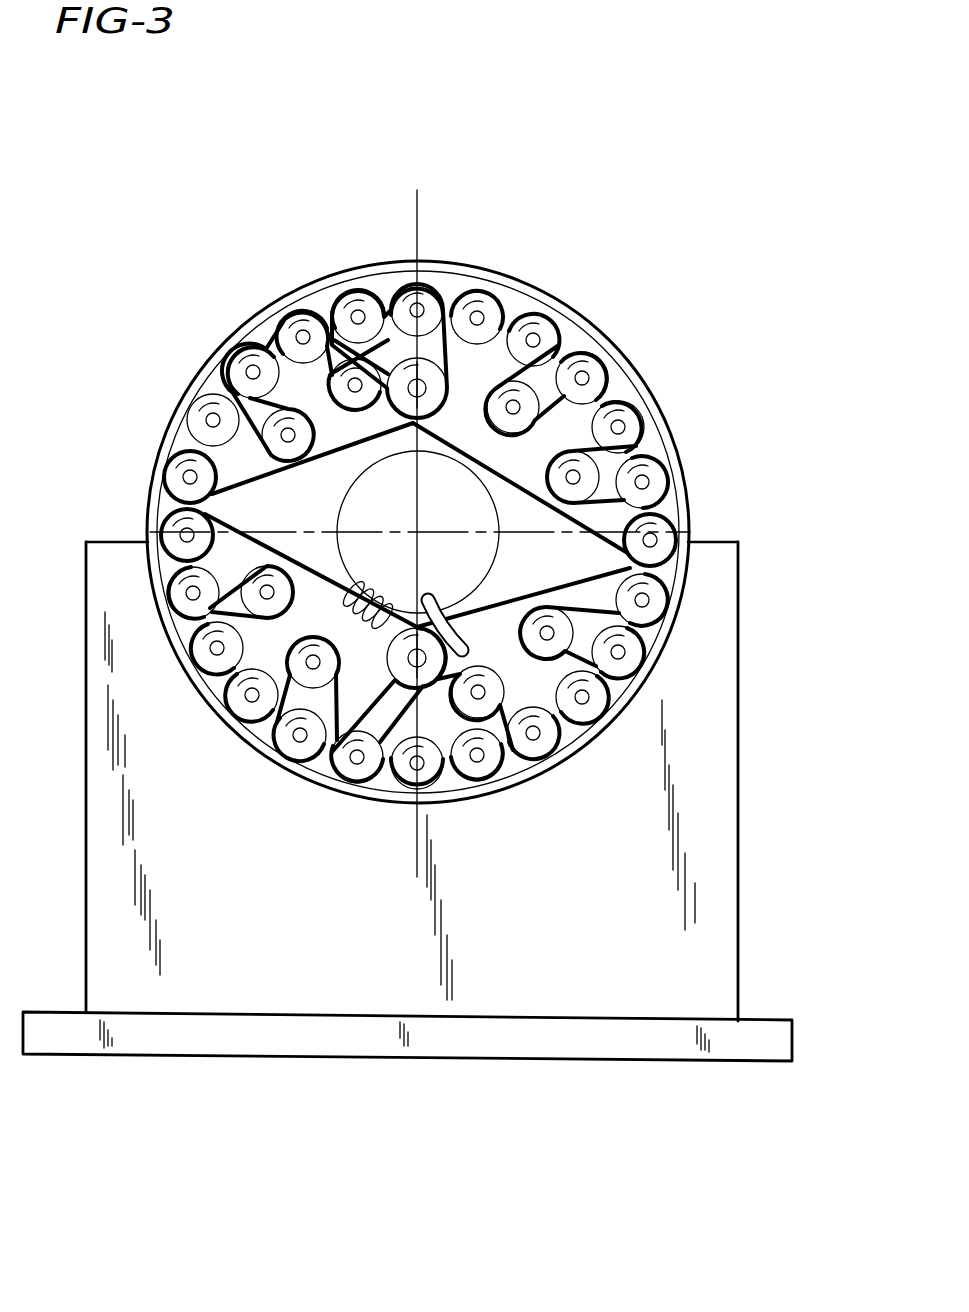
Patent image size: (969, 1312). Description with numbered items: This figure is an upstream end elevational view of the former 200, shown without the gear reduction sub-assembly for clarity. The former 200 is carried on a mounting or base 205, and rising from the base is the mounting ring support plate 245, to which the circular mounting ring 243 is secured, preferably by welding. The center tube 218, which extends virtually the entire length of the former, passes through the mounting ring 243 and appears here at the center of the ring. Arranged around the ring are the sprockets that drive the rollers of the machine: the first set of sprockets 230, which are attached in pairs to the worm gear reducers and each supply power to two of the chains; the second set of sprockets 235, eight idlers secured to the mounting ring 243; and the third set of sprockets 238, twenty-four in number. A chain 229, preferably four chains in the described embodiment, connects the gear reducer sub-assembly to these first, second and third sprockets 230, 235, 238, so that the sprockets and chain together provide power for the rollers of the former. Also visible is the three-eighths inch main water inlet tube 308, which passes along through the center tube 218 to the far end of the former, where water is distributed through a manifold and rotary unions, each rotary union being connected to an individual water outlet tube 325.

The former 200 is at (748, 530).
The base 205 is at (450, 1046).
The center tube 218 is at (359, 495).
The chain 229 is at (460, 420).
The first set of sprockets 230 is at (410, 665).
The second set of sprockets 235 is at (668, 630).
The third set of sprockets 238 is at (303, 337).
The mounting ring 243 is at (663, 401).
The mounting ring support plate 245 is at (738, 838).
The main water inlet tube 308 is at (467, 647).
The individual water outlet tube 325 is at (353, 592).